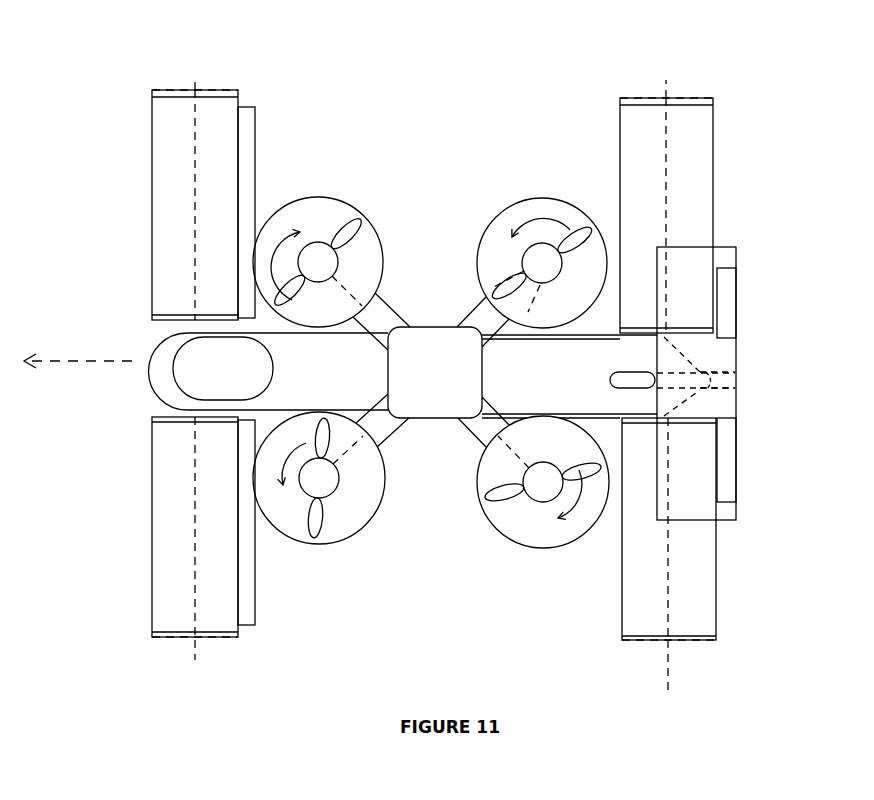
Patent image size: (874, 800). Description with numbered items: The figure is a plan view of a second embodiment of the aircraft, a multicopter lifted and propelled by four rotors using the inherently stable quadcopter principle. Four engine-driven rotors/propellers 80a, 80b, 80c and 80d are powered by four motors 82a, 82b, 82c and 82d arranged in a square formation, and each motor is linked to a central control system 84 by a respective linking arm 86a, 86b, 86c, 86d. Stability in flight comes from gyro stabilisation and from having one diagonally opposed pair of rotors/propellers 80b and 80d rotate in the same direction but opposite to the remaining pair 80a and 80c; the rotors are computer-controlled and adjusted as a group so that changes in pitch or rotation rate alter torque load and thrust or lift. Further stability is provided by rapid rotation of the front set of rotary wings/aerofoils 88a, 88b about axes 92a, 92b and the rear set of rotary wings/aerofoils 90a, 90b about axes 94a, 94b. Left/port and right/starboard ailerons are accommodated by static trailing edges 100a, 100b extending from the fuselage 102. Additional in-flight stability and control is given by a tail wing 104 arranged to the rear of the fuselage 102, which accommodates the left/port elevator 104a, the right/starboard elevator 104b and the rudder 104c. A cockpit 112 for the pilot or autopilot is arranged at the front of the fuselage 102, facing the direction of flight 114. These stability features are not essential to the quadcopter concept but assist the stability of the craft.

The rotor/propeller 80a is at (319, 506).
The rotor/propeller 80b is at (318, 240).
The rotor/propeller 80c is at (542, 238).
The rotor/propeller 80d is at (543, 514).
The motor 82a is at (319, 478).
The motor 82b is at (318, 262).
The motor 82c is at (542, 263).
The motor 82d is at (543, 482).
The control system 84 is at (435, 372).
The linking arm 86a is at (390, 443).
The linking arm 86b is at (387, 300).
The linking arm 86c is at (466, 302).
The linking arm 86d is at (468, 440).
The rotary wing/aerofoil 88a is at (195, 528).
The rotary wing/aerofoil 88b is at (195, 205).
The rotary wing/aerofoil 90a is at (669, 529).
The rotary wing/aerofoil 90b is at (666, 215).
The axis 92a is at (194, 88).
The axis 92b is at (194, 660).
The axis 94a is at (667, 98).
The axis 94b is at (668, 690).
The aileron / static trailing edge 100a is at (257, 613).
The aileron / static trailing edge 100b is at (251, 118).
The fuselage 102 is at (569, 376).
The tail wing 104 is at (630, 372).
The left/port elevator 104a is at (738, 465).
The right/starboard elevator 104b is at (738, 294).
The rudder 104c is at (738, 380).
The cockpit 112 is at (269, 371).
The direction of flight 114 is at (78, 351).